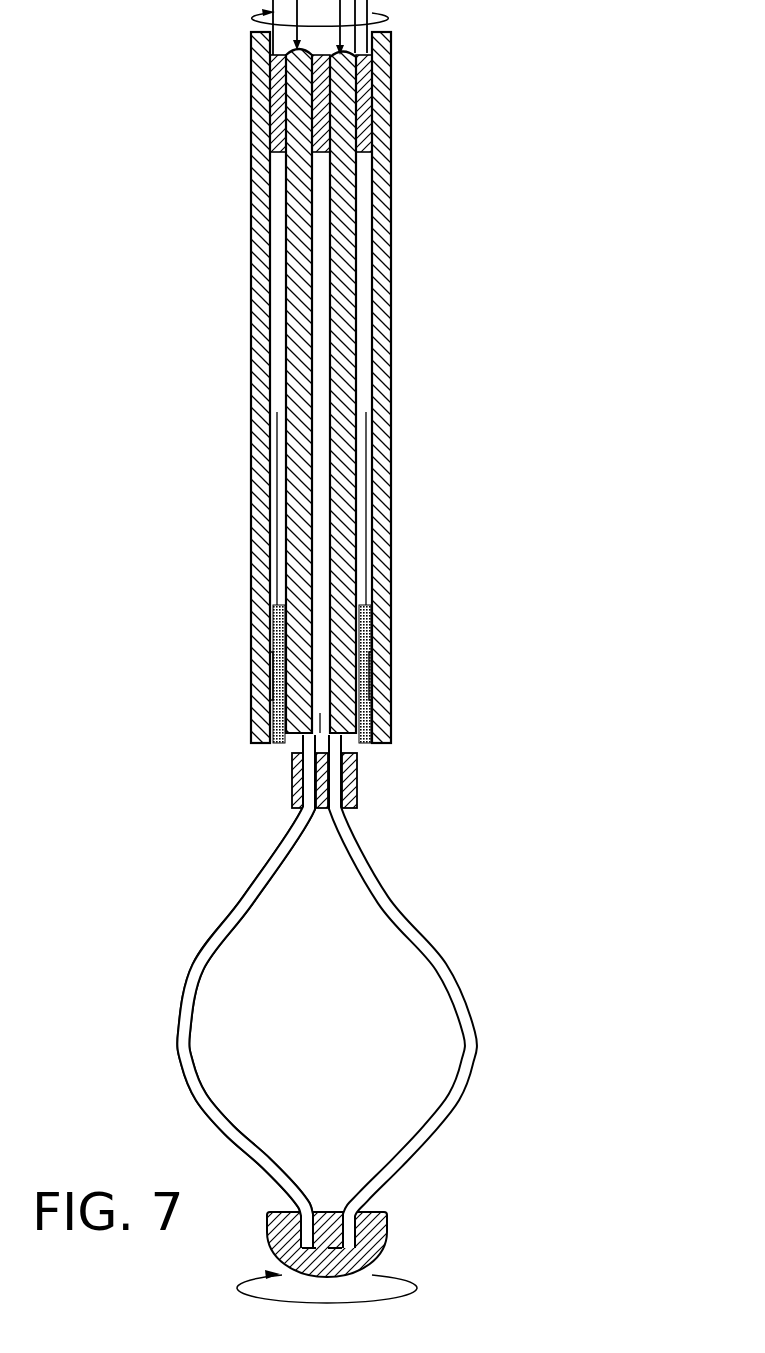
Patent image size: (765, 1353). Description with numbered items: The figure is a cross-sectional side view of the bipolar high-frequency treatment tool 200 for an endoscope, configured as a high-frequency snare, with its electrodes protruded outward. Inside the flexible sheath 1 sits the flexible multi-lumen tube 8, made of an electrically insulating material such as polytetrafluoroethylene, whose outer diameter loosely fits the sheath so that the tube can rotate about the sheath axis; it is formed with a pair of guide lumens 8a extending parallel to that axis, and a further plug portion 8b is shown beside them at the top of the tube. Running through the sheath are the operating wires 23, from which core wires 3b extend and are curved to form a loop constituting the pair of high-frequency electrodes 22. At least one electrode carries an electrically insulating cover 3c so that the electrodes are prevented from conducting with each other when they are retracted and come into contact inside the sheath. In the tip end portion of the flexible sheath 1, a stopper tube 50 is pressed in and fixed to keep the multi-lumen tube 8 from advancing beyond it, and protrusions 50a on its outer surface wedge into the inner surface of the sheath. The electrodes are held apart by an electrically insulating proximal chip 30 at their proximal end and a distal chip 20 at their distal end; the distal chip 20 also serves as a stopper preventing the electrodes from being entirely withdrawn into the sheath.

The flexible sheath 1 is at (385, 438).
The core wires 3b is at (246, 991).
The electrically insulating cover 3c is at (288, 445).
The multi-lumen tube 8 is at (362, 78).
The guide lumens 8a is at (363, 125).
The cap portion 8b is at (274, 97).
The distal chip 20 is at (372, 1238).
The high-frequency electrodes 22 is at (215, 943).
The operating wires 23 is at (296, 295).
The proximal chip 30 is at (292, 785).
The stopper tube 50 is at (413, 683).
The protrusions 50a is at (265, 700).
The bipolar high-frequency treatment tool 200 is at (513, 201).